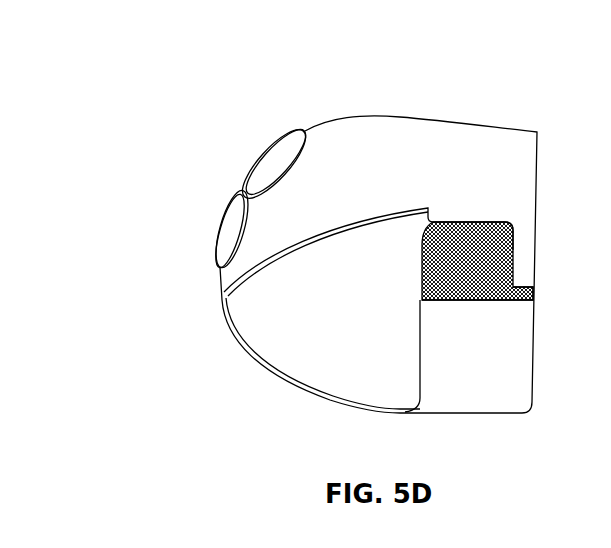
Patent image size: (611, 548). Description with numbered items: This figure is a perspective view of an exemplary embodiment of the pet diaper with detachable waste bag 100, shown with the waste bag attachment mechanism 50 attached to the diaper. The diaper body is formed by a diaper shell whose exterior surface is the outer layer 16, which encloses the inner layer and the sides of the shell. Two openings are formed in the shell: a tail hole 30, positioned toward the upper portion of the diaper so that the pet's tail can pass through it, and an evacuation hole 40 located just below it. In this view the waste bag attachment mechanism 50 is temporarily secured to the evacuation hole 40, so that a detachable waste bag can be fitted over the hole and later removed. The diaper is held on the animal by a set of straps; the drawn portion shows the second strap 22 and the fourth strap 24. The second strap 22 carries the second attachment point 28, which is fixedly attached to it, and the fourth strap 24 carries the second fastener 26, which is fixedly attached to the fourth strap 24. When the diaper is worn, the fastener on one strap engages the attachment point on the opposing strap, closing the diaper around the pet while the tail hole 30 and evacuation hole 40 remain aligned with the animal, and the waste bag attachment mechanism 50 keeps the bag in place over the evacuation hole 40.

The pet diaper with detachable waste bag 100 is at (165, 74).
The outer layer 16 is at (416, 127).
The tail hole 30 is at (275, 163).
The evacuation hole 40 is at (226, 232).
The waste bag attachment mechanism 50 is at (240, 197).
The fourth strap 24 is at (524, 266).
The second fastener 26 is at (514, 236).
The second strap 22 is at (505, 300).
The second attachment point 28 is at (480, 300).